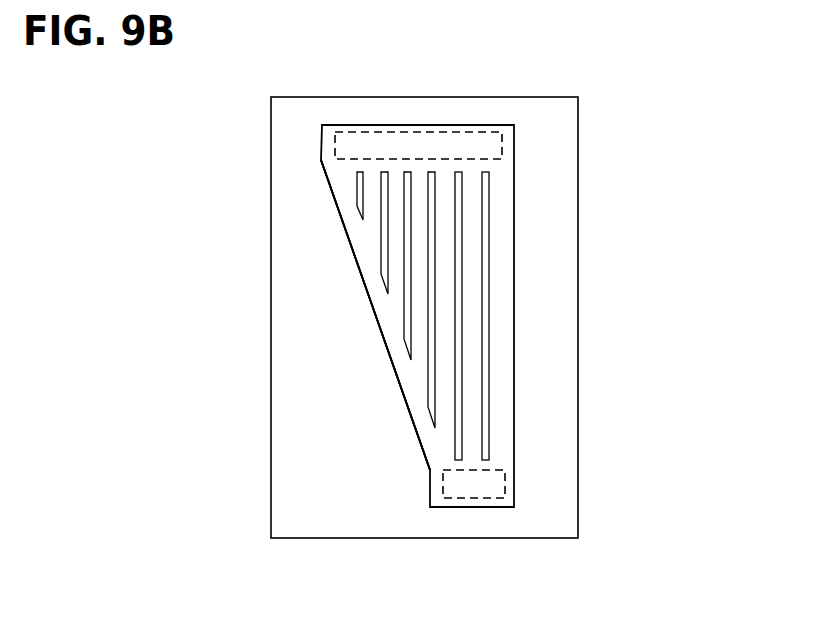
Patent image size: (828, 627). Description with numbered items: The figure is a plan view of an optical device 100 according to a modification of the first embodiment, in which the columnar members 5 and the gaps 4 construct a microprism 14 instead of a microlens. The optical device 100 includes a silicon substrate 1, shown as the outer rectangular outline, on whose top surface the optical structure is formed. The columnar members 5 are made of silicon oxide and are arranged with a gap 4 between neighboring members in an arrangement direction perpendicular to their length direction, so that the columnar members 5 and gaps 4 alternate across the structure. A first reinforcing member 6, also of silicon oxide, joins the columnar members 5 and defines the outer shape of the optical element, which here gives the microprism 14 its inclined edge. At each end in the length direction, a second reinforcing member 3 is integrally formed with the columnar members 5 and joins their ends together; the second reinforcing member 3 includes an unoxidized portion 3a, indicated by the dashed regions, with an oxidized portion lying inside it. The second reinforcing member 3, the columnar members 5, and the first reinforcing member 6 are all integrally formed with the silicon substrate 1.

The optical device 100 is at (601, 96).
The silicon substrate 1 is at (579, 291).
The second reinforcing member 3 is at (484, 508).
The unoxidized portion 3a is at (503, 140).
The gap 4 is at (483, 217).
The columnar member 5 is at (500, 350).
The first reinforcing member 6 is at (375, 286).
The microprism 14 is at (398, 382).